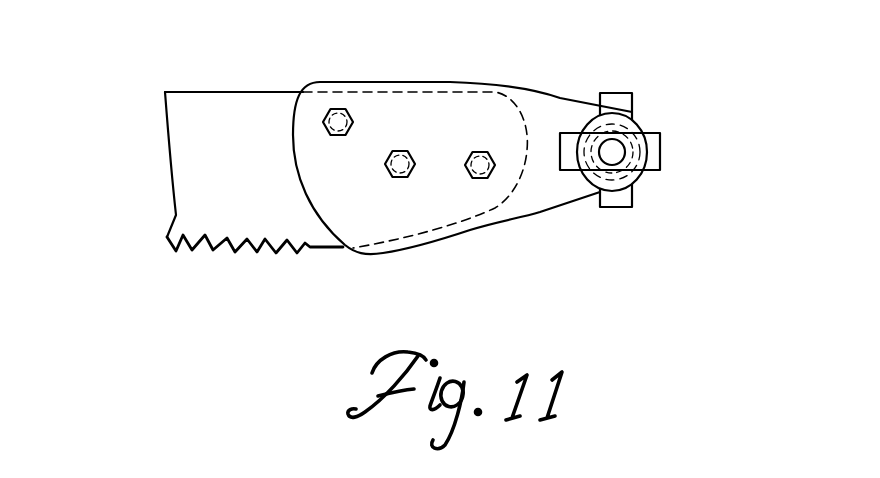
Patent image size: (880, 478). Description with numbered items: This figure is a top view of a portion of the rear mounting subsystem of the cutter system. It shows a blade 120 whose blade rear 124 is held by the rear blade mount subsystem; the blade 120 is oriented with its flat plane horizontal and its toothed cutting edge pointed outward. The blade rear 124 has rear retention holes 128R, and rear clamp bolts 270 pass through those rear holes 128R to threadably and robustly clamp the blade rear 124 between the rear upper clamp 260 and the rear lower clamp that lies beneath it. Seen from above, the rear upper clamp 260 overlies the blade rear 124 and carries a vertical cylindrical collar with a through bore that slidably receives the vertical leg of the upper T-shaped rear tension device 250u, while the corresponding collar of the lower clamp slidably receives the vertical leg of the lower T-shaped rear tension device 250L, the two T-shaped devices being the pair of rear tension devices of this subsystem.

The blade 120 is at (222, 92).
The blade rear 124 is at (188, 128).
The rear retention hole 128R is at (337, 106).
The rear clamp bolt 270 is at (387, 168).
The rear upper clamp 260 is at (424, 246).
The lower T-shaped rear tension device 250L is at (620, 95).
The upper T-shaped rear tension device 250u is at (658, 158).